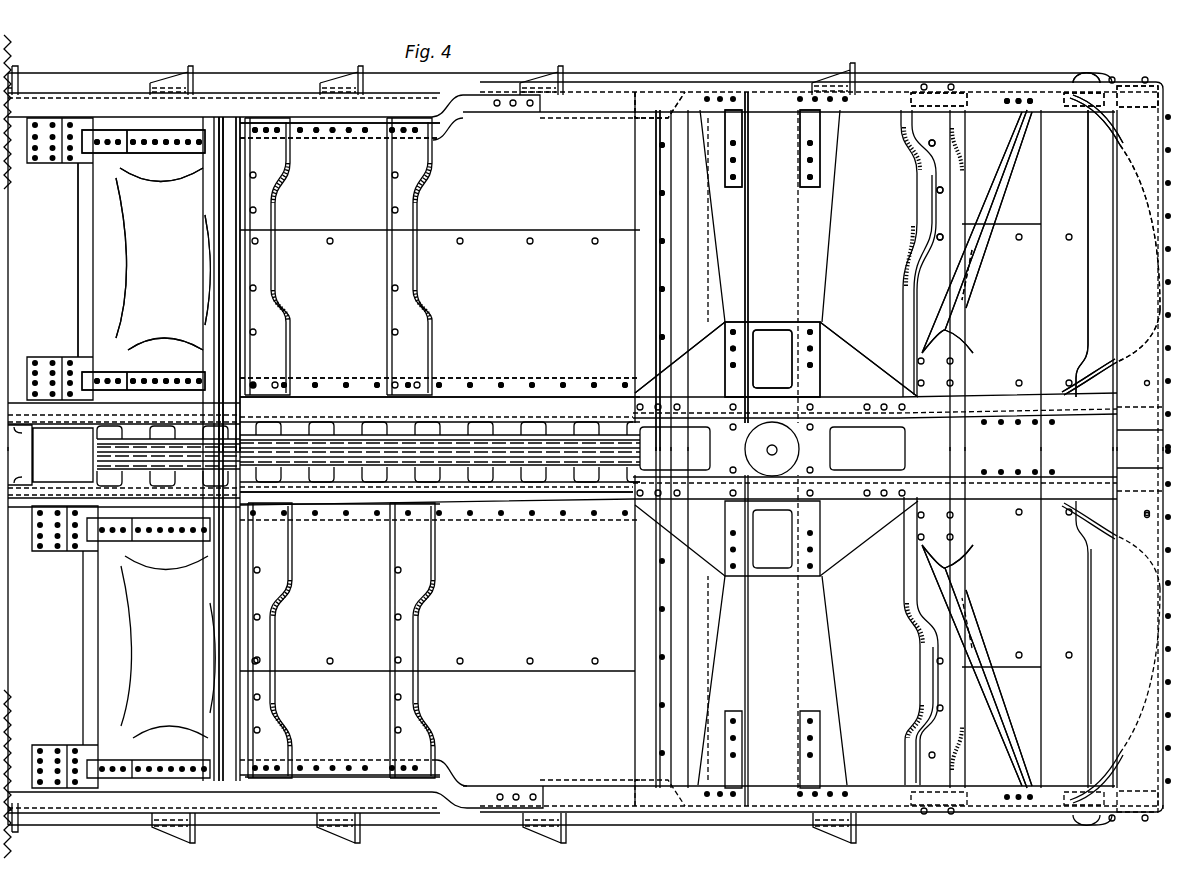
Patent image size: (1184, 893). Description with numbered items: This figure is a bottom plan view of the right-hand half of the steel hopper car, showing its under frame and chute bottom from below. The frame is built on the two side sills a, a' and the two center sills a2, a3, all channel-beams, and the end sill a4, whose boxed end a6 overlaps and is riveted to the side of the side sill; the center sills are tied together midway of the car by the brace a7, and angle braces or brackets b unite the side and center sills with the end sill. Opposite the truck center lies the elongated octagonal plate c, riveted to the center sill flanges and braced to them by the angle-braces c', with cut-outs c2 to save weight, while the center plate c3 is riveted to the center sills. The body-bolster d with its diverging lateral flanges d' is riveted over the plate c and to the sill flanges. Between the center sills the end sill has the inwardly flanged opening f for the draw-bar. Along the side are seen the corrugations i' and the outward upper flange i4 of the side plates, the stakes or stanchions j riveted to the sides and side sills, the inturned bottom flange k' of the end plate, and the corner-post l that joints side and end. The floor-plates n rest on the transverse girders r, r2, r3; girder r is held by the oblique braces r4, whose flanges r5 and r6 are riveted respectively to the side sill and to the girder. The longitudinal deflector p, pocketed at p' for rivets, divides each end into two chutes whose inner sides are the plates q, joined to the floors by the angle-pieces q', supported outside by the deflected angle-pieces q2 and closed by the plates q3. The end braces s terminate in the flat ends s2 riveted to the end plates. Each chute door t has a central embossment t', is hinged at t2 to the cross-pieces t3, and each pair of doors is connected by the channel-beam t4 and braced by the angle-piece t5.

The side sill a is at (460, 784).
The side sill a' is at (611, 199).
The center sill a2 is at (436, 496).
The center sill a3 is at (440, 406).
The end sill a4 is at (828, 740).
The boxed end of end sill a6 is at (1122, 85).
The brace a7 is at (40, 456).
The angle brace or bracket b is at (1124, 774).
The plate c is at (776, 359).
The angle-brace c' is at (777, 425).
The cut-out c2 is at (772, 400).
The center plate c3 is at (771, 449).
The body-bolster d is at (772, 447).
The lateral flange of bolster d' is at (753, 398).
The opening f is at (1137, 512).
The longitudinal corrugation i' is at (927, 75).
The outwardly extending flange i4 is at (982, 818).
The stake or stanchion j is at (857, 832).
The inturned bottom flange k' is at (1017, 445).
The corner-post l is at (1087, 76).
The floor-plate n is at (440, 433).
The longitudinal deflector p is at (368, 454).
The pocket p' is at (440, 508).
The plate q is at (248, 272).
The angle-piece q' is at (340, 529).
The angle-piece q2 is at (335, 773).
The plate q3 is at (312, 787).
The transverse girder r is at (919, 447).
The transverse girder r2 is at (658, 310).
The transverse girder r3 is at (416, 580).
The brace r4 is at (988, 262).
The flange of brace r5 is at (975, 372).
The flange of brace r6 is at (1000, 105).
The brace s is at (1095, 538).
The flat end of brace s2 is at (1097, 578).
The door t is at (161, 452).
The embossment t' is at (163, 417).
The hinge t2 is at (93, 538).
The cross-piece t3 is at (58, 260).
The channel-beam t4 is at (210, 354).
The angle-piece t5 is at (214, 287).